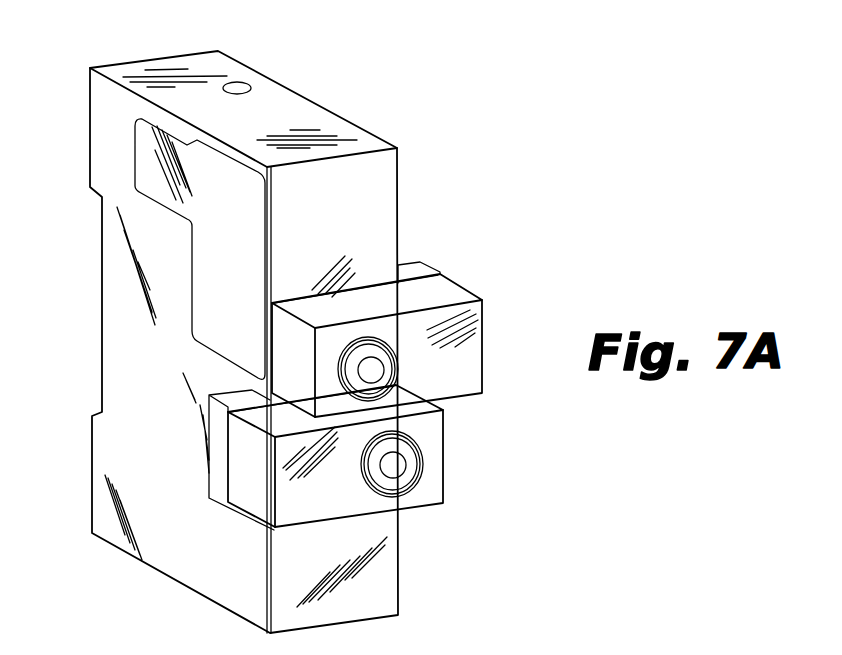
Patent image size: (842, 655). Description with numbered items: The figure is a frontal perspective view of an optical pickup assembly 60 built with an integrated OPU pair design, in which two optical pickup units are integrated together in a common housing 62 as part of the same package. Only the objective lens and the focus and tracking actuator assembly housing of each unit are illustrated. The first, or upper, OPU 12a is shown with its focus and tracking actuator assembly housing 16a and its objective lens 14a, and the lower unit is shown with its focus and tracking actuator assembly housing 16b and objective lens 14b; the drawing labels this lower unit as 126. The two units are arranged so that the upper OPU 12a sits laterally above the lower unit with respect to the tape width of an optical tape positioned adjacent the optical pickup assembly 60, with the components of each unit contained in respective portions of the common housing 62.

The optical pickup assembly 60 is at (440, 75).
The common housing 62 is at (152, 357).
The first OPU 12a is at (493, 282).
The focus and tracking actuator assembly housing 16a is at (442, 297).
The objective lens 14a is at (370, 370).
The second connector module 126 is at (473, 480).
The focus and tracking actuator assembly housing 16b is at (430, 433).
The objective lens 14b is at (393, 465).